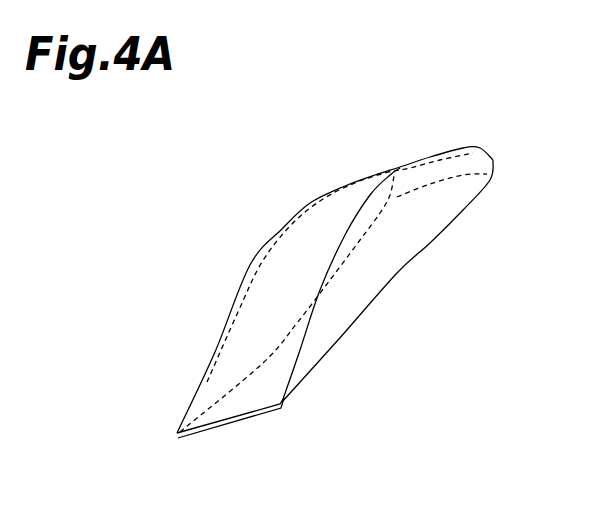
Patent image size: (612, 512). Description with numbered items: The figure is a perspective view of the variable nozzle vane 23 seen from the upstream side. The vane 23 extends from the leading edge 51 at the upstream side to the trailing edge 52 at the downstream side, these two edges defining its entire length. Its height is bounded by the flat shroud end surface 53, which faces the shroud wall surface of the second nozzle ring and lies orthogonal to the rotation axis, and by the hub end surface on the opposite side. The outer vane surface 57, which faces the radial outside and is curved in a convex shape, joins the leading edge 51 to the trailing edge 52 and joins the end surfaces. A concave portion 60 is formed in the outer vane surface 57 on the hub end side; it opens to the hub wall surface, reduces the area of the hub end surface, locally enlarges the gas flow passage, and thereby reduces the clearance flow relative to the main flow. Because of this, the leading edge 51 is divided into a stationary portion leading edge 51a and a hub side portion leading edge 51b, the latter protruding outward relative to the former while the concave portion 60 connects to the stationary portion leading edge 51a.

The variable nozzle vane 23 is at (505, 120).
The leading edge 51 is at (475, 97).
The stationary portion leading edge 51a is at (487, 160).
The hub side portion leading edge 51b is at (393, 173).
The trailing edge 52 is at (227, 423).
The shroud end surface 53 is at (420, 233).
The outer vane surface 57 is at (280, 283).
The concave portion 60 is at (278, 219).